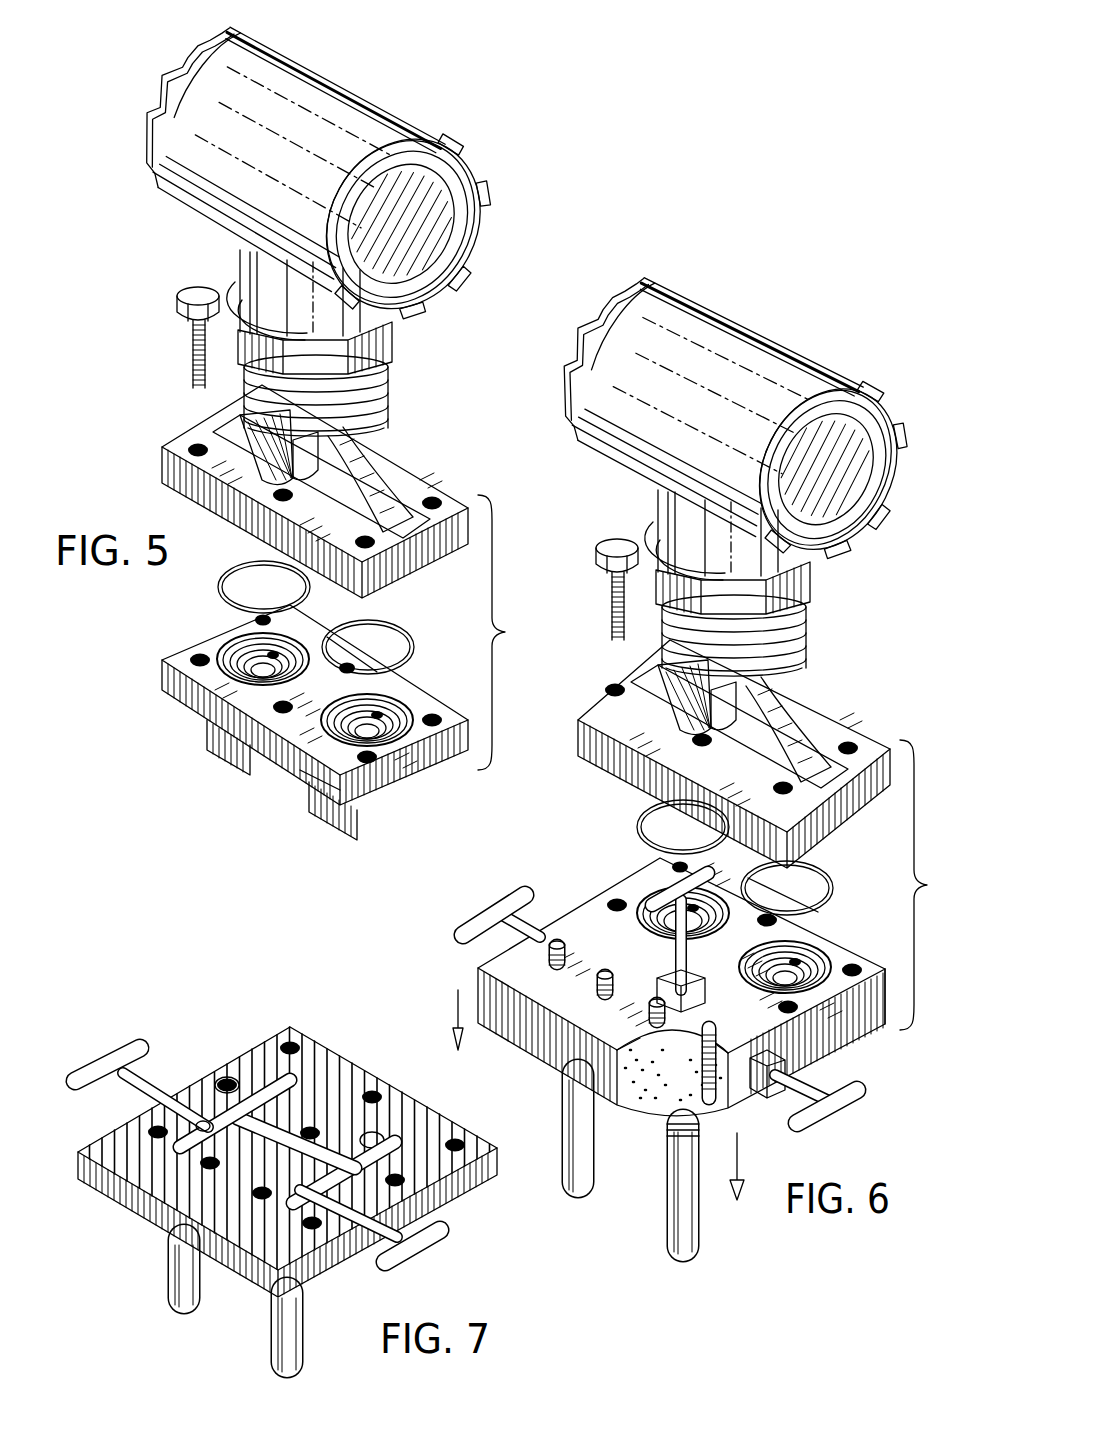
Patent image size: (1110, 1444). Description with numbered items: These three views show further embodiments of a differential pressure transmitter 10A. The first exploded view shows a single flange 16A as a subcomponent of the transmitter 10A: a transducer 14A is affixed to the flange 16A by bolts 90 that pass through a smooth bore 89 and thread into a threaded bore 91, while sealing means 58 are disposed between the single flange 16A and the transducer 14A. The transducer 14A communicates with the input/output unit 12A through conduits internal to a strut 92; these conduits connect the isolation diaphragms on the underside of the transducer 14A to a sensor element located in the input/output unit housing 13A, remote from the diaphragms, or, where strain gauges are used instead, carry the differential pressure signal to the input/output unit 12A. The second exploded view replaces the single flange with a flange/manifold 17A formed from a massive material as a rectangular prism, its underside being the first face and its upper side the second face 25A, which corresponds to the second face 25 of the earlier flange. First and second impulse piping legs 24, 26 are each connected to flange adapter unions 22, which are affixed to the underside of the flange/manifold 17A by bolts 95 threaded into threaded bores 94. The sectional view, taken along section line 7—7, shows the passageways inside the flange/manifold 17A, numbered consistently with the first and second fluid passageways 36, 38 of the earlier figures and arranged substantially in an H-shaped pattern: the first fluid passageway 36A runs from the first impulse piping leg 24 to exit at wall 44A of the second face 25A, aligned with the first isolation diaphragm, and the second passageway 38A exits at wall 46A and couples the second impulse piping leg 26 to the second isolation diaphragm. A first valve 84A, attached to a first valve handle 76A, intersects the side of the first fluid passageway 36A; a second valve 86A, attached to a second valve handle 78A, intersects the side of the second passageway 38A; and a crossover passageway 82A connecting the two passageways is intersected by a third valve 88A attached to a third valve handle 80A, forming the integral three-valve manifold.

In FIG. 5, the differential pressure transmitter 10A is at (365, 75).
In FIG. 6, the differential pressure transmitter 10A is at (817, 304).
In FIG. 5, the input/output unit 12A is at (385, 137).
In FIG. 6, the input/output unit 12A is at (793, 373).
In FIG. 5, the input/output unit housing 13A is at (287, 54).
In FIG. 6, the input/output unit housing 13A is at (712, 300).
In FIG. 5, the transducer 14A is at (207, 433).
In FIG. 6, the transducer 14A is at (826, 719).
In FIG. 5, the single flange 16A is at (188, 692).
In FIG. 6, the flange/manifold 17A is at (480, 990).
In FIG. 7, the flange/manifold 17A is at (207, 1195).
In FIG. 6, the flange adapter unions 22 is at (713, 1128).
In FIG. 6, the first impulse piping leg 24 is at (692, 1237).
In FIG. 7, the first impulse piping leg 24 is at (293, 1337).
In FIG. 5, the second face 25 is at (312, 739).
In FIG. 6, the second face 25A is at (770, 1020).
In FIG. 6, the second impulse piping leg 26 is at (588, 1190).
In FIG. 7, the second impulse piping leg 26 is at (187, 1297).
In FIG. 5, the locating recess 36 is at (390, 713).
In FIG. 6, the first fluid passageway 36A is at (800, 961).
In FIG. 7, the first fluid passageway 36A is at (380, 1140).
In FIG. 5, the locating recess 38 is at (258, 644).
In FIG. 6, the second passageway 38A is at (713, 888).
In FIG. 7, the second passageway 38A is at (228, 1080).
In FIG. 6, the wall 44A is at (850, 976).
In FIG. 6, the wall 46A is at (722, 886).
In FIG. 5, the sealing means 58 is at (370, 624).
In FIG. 6, the sealing means 58 is at (678, 809).
In FIG. 6, the first valve handle 76A is at (815, 1105).
In FIG. 7, the first valve handle 76A is at (423, 1247).
In FIG. 6, the second valve handle 78A is at (500, 894).
In FIG. 7, the second valve handle 78A is at (80, 1077).
In FIG. 6, the third valve handle 80A is at (668, 883).
In FIG. 7, the crossover passageway 82A is at (292, 1145).
In FIG. 7, the first valve 84A is at (318, 1200).
In FIG. 7, the second valve 86A is at (205, 1075).
In FIG. 7, the third valve 88A is at (278, 1147).
In FIG. 5, the smooth bore 89 is at (190, 453).
In FIG. 6, the smooth bore 89 is at (612, 681).
In FIG. 5, the bolts 90 is at (198, 290).
In FIG. 6, the bolts 90 is at (619, 538).
In FIG. 5, the threaded bore 91 is at (200, 656).
In FIG. 6, the threaded bore 91 is at (614, 901).
In FIG. 7, the threaded bore 91 is at (228, 1080).
In FIG. 5, the strut 92 is at (375, 469).
In FIG. 6, the strut 92 is at (785, 683).
In FIG. 6, the threaded bores 94 is at (680, 1092).
In FIG. 7, the threaded bores 94 is at (205, 1162).
In FIG. 6, the bolts 95 is at (603, 979).
In FIG. 6, the section line 7— 7 is at (598, 1112).